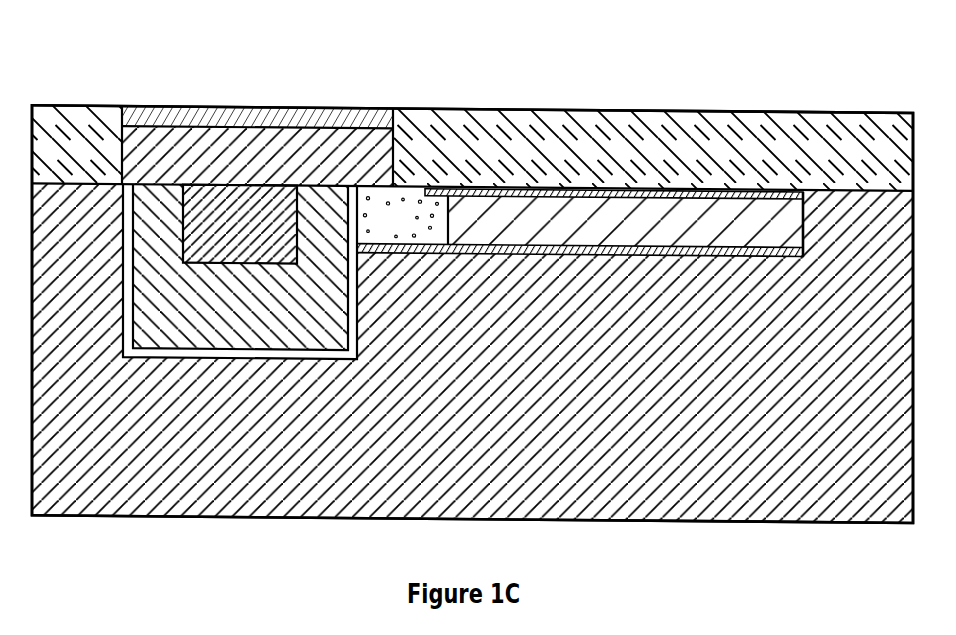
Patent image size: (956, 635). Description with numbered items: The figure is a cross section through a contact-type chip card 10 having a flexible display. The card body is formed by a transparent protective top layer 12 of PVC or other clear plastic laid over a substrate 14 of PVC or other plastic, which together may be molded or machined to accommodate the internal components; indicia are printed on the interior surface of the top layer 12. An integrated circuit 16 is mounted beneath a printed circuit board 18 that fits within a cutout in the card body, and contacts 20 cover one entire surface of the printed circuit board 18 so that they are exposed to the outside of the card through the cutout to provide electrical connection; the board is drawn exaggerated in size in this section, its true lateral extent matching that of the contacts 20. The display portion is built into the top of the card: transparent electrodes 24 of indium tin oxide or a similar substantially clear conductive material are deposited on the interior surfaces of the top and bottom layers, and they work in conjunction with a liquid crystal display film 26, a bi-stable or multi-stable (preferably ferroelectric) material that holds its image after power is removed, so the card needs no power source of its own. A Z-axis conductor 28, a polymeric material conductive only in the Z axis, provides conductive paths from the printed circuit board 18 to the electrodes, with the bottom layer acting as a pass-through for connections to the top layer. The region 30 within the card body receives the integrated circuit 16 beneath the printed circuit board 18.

The semiconductor device structure 10 is at (150, 76).
The transparent protective top layer 12 is at (89, 157).
The substrate 14 is at (636, 471).
The integrated circuit 16 is at (250, 236).
The printed circuit board 18 is at (252, 167).
The contacts 20 is at (338, 122).
The transparent electrodes 24 is at (805, 198).
The liquid crystal display film 26 is at (622, 235).
The Z-axis conductor 28 is at (409, 231).
The trench region 30 is at (249, 331).